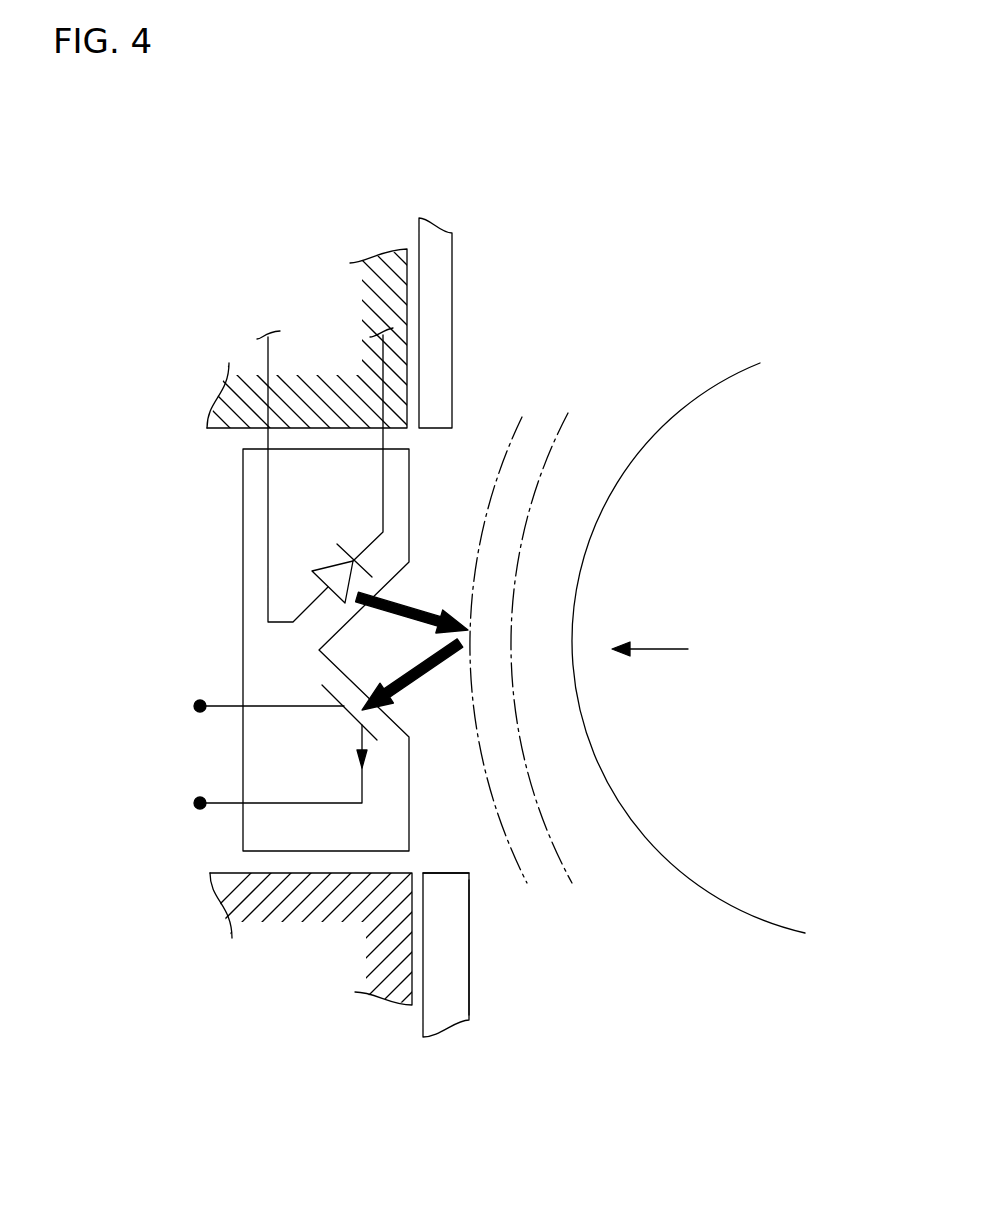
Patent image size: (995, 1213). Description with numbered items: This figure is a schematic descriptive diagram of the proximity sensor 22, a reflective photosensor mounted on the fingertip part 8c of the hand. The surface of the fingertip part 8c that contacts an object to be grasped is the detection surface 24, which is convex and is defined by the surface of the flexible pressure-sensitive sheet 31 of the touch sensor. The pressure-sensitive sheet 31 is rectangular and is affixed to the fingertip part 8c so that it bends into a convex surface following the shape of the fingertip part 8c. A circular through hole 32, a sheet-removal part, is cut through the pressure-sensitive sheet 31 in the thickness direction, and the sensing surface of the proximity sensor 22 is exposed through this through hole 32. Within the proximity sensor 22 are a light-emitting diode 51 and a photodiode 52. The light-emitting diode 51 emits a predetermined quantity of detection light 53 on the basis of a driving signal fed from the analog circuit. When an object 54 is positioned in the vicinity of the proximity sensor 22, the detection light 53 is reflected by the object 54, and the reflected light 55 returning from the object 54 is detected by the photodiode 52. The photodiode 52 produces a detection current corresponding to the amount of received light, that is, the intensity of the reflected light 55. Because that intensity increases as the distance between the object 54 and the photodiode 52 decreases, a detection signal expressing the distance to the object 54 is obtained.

The fingertip part 8c is at (493, 310).
The proximity sensor 22 is at (180, 482).
The detection surface 24 is at (469, 920).
The pressure-sensitive sheet 31 is at (469, 978).
The through hole 32 is at (440, 870).
The light-emitting diode 51 is at (328, 570).
The photodiode 52 is at (345, 712).
The detection light 53 is at (427, 603).
The object 54 is at (730, 448).
The reflected light 55 is at (427, 678).